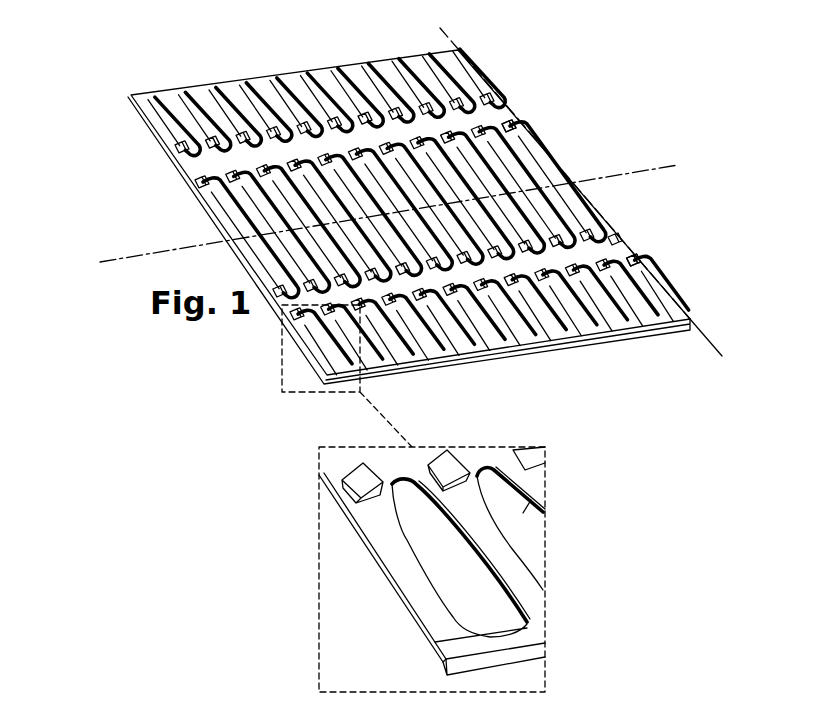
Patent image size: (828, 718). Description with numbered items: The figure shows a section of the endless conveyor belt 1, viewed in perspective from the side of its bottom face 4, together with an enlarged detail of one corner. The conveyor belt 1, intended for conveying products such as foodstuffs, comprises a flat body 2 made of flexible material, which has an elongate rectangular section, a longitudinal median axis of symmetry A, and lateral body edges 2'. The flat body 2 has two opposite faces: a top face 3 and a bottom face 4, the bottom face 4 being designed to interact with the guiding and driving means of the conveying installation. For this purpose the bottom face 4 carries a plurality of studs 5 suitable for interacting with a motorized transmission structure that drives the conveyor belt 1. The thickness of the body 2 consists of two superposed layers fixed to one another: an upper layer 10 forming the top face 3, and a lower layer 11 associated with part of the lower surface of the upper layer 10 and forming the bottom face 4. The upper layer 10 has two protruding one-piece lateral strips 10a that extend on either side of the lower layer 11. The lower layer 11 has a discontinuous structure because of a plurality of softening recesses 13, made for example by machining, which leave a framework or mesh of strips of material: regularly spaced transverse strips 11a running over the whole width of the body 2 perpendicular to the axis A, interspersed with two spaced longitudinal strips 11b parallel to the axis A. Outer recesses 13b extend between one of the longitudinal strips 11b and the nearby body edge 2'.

The conveyor belt 1 is at (218, 63).
The flat body 2 is at (379, 212).
The body edge 2' is at (409, 220).
The top face 3 is at (345, 544).
The bottom face 4 is at (482, 113).
The stud 5 is at (512, 127).
The upper layer 10 is at (330, 500).
The lateral strip 10a is at (263, 87).
The lower layer 11 is at (211, 210).
The transverse strip 11a is at (312, 102).
The longitudinal strip 11b is at (192, 167).
The softening recess 13 is at (603, 332).
The outer recess 13b is at (538, 487).
The longitudinal median axis of symmetry A is at (633, 174).